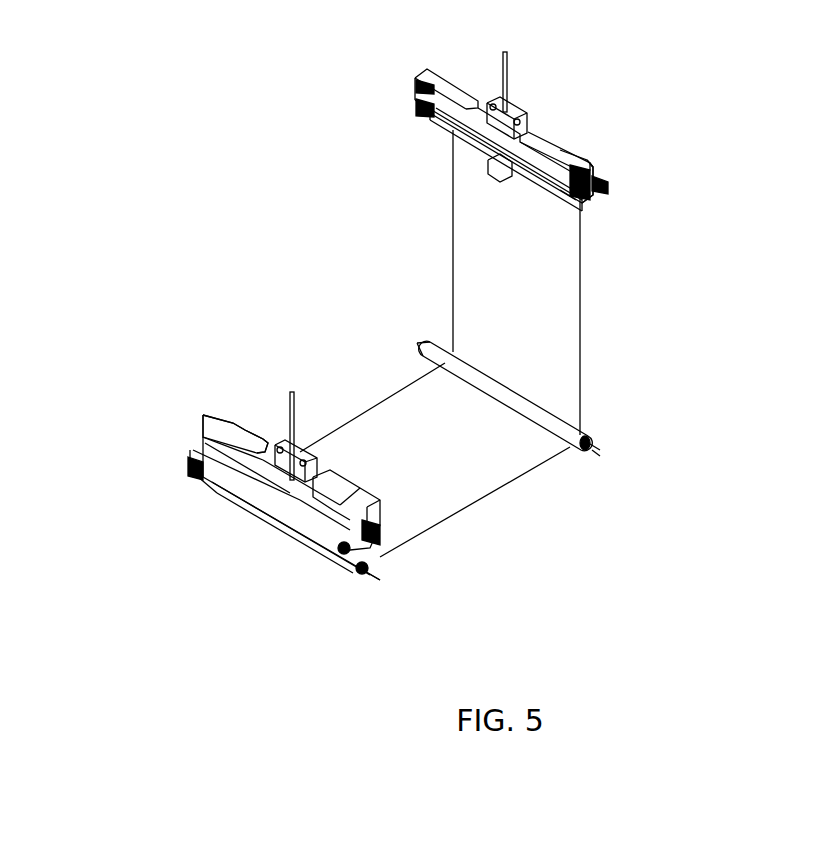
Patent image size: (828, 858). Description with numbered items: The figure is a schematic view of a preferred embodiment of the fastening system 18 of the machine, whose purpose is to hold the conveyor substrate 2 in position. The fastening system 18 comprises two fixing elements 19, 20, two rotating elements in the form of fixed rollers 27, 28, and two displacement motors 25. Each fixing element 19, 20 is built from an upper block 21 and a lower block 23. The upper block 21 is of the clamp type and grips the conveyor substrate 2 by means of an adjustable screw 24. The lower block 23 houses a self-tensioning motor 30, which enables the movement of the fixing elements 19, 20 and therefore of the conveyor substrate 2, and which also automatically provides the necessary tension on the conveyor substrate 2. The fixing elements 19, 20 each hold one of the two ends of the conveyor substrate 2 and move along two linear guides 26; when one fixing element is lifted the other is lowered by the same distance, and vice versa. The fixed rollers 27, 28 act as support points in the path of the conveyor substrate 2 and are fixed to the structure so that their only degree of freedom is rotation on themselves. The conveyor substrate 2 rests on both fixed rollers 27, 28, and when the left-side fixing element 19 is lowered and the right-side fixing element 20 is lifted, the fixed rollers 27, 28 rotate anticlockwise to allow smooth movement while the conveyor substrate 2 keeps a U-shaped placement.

The conveyor substrate 2 is at (492, 452).
The fastening system 18 is at (313, 298).
The fixing element 19 is at (180, 477).
The fixing element 20 is at (407, 82).
The upper block 21 is at (590, 165).
The lower block 23 is at (585, 205).
The adjustable screw 24 is at (607, 183).
The displacement motor 25 is at (415, 106).
The linear guide 26 is at (508, 80).
The fixed roller 27 is at (362, 580).
The fixed roller 28 is at (597, 435).
The self-tensioning motor 30 is at (500, 170).